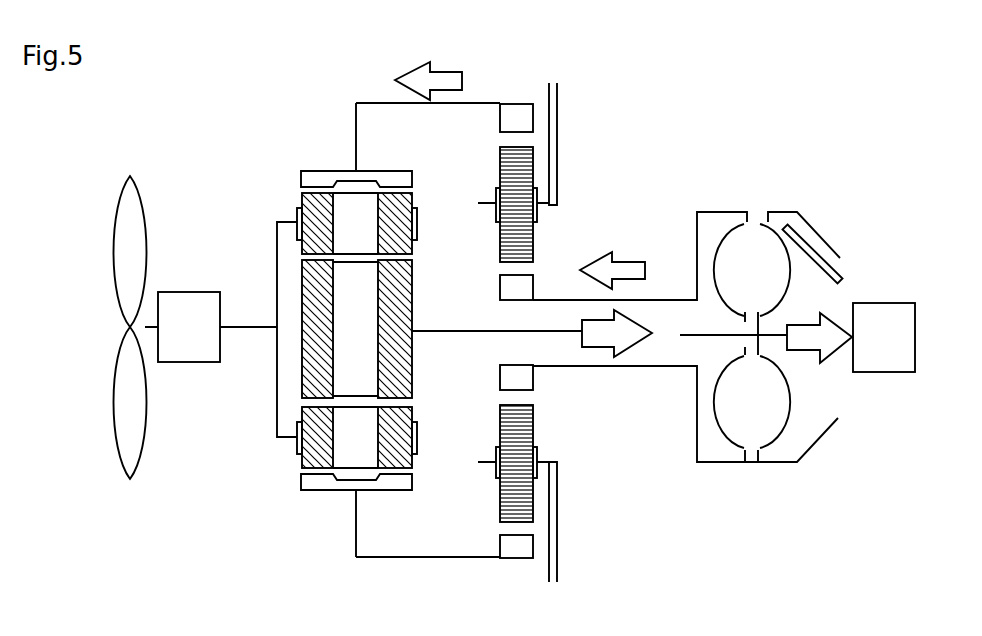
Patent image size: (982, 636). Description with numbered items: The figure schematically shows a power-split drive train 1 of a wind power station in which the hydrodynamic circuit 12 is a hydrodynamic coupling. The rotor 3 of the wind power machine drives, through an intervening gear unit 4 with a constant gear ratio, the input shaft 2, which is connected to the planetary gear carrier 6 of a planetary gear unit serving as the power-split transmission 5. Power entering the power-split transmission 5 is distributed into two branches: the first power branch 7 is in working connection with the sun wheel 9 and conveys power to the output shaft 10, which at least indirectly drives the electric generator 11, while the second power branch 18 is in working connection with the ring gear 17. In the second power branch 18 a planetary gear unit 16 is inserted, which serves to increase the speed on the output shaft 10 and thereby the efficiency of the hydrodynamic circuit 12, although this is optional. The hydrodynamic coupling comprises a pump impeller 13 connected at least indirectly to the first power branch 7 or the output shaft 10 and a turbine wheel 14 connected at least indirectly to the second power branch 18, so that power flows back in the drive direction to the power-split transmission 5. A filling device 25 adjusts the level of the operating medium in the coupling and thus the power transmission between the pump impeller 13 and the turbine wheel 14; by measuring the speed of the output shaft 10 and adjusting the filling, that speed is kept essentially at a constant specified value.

The drive train 1 is at (482, 611).
The input shaft 2 is at (249, 333).
The rotor 3 is at (121, 404).
The gear unit 4 is at (181, 341).
The power-split transmission 5 is at (347, 330).
The planetary gear carrier 6 is at (347, 236).
The first power branch 7 is at (603, 340).
The sun wheel 9 is at (347, 342).
The output shaft 10 is at (433, 330).
The electric generator 11 is at (872, 349).
The hydrodynamic circuit 12 is at (719, 308).
The pump impeller 13 is at (790, 273).
The turbine wheel 14 is at (733, 228).
The planetary gear unit 16 is at (571, 164).
The ring gear 17 is at (345, 172).
The second power branch 18 is at (447, 72).
The filling device 25 is at (838, 268).